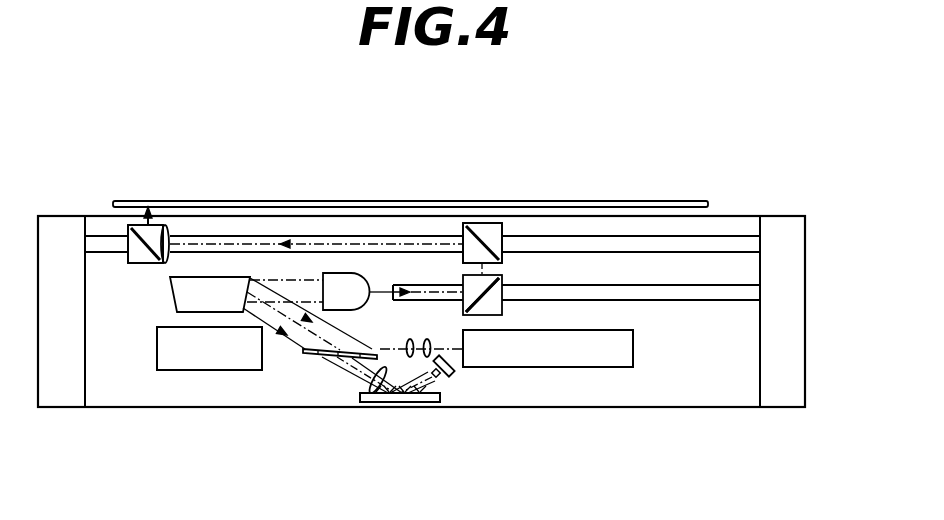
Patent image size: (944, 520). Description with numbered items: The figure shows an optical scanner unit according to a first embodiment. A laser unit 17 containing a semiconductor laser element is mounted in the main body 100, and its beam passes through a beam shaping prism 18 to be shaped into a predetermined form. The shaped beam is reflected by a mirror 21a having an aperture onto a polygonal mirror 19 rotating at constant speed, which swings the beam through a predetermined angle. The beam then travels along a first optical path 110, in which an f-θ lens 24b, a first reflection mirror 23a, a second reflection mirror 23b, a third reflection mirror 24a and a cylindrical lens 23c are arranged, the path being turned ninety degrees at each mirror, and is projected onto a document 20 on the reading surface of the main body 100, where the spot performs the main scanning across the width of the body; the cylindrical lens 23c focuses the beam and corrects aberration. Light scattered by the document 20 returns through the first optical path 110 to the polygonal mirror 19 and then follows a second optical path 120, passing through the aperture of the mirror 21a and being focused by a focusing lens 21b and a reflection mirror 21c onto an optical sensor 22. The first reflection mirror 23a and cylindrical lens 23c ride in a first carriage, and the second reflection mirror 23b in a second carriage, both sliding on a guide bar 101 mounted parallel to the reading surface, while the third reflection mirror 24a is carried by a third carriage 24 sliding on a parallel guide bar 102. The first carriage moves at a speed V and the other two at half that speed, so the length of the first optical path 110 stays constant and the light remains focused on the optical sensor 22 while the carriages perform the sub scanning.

The main body 100 is at (788, 377).
The guide bar 101 is at (735, 236).
The guide bar 102 is at (722, 290).
The first optical path 110 is at (242, 228).
The second optical path 120 is at (337, 378).
The laser unit 17 is at (612, 357).
The beam shaping prism 18 is at (413, 348).
The polygonal mirror 19 is at (190, 312).
The document 20 is at (380, 200).
The mirror having an aperture 21a is at (303, 352).
The focusing lens 21b is at (360, 402).
The reflection mirror 21c is at (412, 402).
The optical sensor 22 is at (447, 376).
The first reflection mirror 23a is at (128, 244).
The second reflection mirror 23b is at (485, 223).
The cylindrical lens 23c is at (167, 226).
The third carriage 24 is at (512, 290).
The third reflection mirror 24a is at (490, 290).
The f-θ lens 24b is at (327, 273).